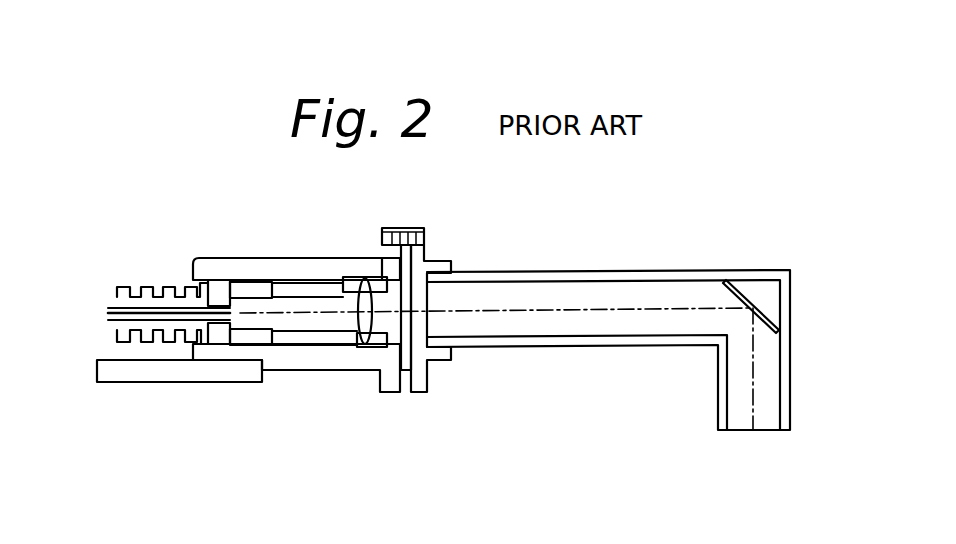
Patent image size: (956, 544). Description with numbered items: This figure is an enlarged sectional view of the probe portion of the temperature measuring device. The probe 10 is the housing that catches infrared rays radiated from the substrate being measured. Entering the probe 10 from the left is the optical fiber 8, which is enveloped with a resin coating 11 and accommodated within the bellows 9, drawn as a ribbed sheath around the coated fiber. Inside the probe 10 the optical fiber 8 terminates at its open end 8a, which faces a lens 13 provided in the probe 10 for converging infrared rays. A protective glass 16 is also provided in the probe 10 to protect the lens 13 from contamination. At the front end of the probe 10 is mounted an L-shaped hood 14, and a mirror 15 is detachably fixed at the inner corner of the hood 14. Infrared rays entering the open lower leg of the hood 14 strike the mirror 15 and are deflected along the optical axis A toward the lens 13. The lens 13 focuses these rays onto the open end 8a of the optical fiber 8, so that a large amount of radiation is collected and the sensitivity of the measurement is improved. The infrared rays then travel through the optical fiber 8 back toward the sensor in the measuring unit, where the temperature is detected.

The optical fiber 8 is at (145, 309).
The open end of the optical fiber 8a is at (232, 307).
The bellows 9 is at (163, 287).
The probe 10 is at (290, 373).
The resin coating 11 is at (109, 311).
The lens 13 is at (360, 303).
The L-shaped hood 14 is at (575, 270).
The mirror 15 is at (750, 287).
The protective glass 16 is at (423, 272).
The optical axis A is at (593, 312).